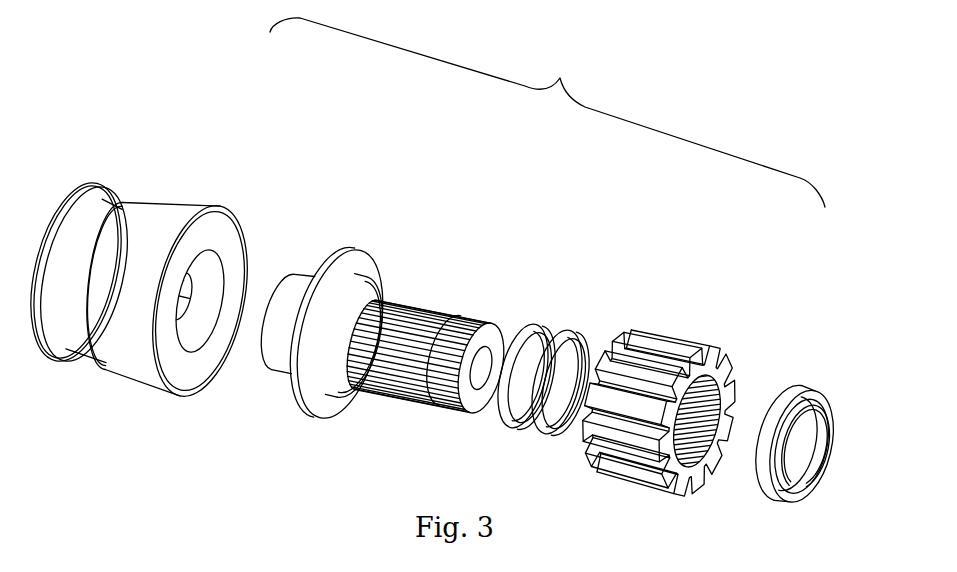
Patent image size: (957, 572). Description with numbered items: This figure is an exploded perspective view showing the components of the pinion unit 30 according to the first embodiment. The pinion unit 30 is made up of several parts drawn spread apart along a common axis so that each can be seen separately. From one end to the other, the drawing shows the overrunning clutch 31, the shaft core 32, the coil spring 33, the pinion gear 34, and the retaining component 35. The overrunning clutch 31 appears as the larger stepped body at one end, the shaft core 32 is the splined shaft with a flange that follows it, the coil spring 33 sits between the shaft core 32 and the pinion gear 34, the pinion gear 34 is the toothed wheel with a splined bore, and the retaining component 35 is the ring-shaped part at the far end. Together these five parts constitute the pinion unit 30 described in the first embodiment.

The pinion unit 30 is at (576, 70).
The overrunning clutch 31 is at (193, 215).
The shaft core 32 is at (403, 330).
The coil spring 33 is at (535, 340).
The pinion gear 34 is at (615, 370).
The retaining component 35 is at (762, 397).